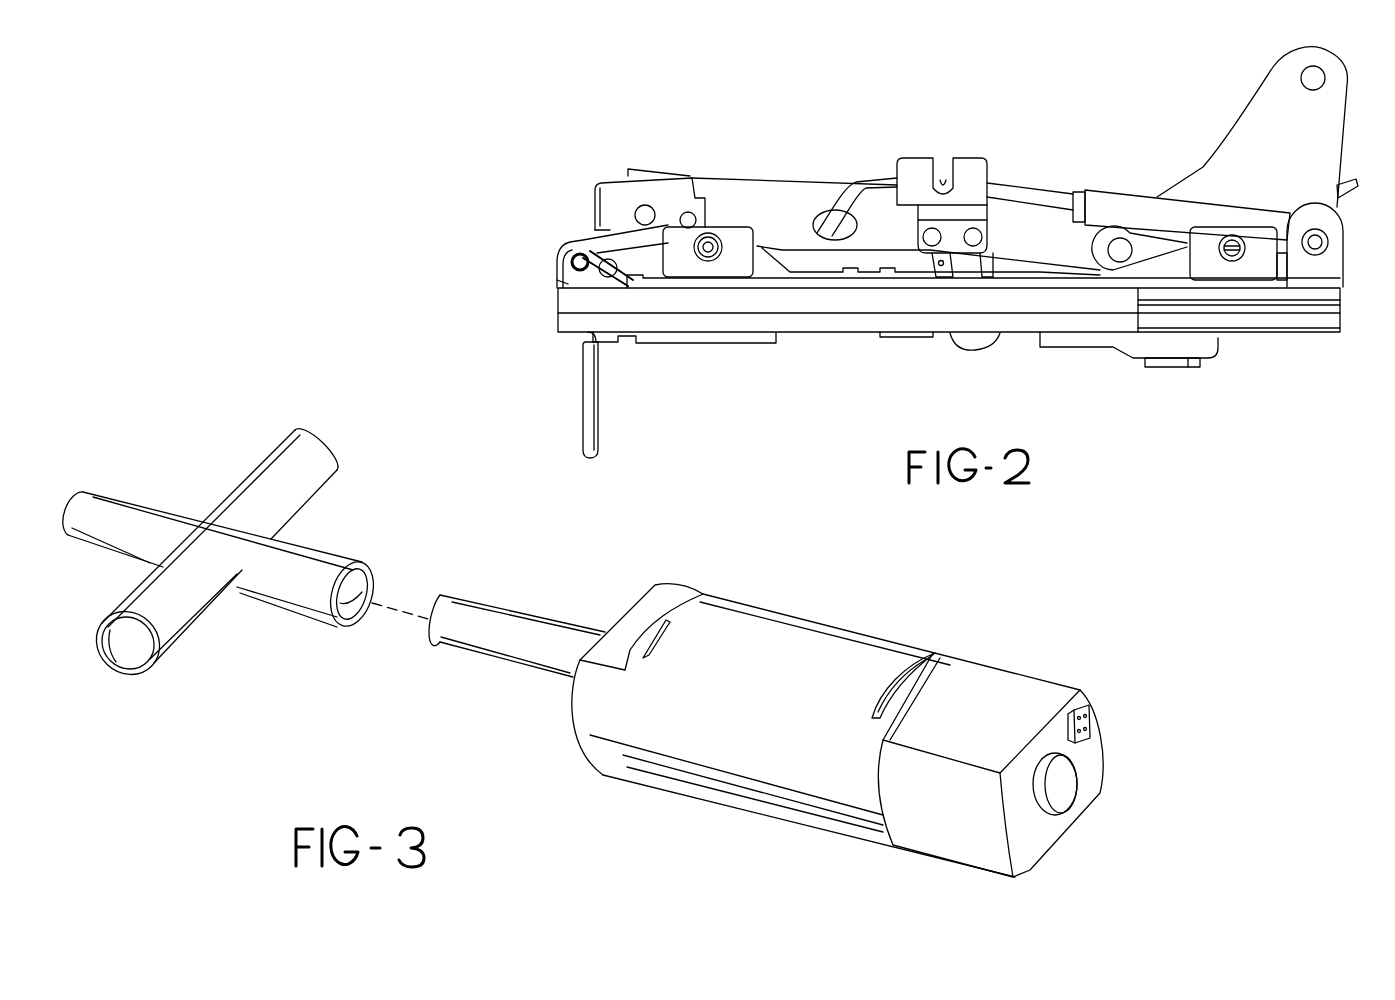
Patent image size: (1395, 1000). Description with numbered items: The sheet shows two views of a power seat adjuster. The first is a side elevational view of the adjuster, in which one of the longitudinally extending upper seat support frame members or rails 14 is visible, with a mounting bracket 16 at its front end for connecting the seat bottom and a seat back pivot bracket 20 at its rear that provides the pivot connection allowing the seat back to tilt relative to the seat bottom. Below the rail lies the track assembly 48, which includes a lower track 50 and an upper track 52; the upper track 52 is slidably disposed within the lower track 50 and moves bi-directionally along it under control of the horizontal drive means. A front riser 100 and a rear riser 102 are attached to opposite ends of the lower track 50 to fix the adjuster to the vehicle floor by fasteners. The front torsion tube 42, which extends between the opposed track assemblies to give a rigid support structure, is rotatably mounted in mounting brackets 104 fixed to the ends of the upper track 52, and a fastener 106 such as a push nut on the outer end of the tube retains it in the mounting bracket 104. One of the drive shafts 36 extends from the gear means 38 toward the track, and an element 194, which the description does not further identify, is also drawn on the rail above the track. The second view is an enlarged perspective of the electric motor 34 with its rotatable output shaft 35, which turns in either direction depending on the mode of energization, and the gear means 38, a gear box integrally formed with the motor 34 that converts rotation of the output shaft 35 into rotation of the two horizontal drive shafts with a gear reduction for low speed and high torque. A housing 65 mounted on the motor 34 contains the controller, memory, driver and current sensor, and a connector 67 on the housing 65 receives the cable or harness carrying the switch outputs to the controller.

In FIG. 2, the frame member 14 is at (730, 186).
In FIG. 2, the mounting bracket 16 is at (607, 180).
In FIG. 2, the seat back pivot bracket 20 is at (1328, 150).
In FIG. 2, the drive shaft 36 is at (578, 242).
In FIG. 2, the front torsion tube 42 is at (722, 252).
In FIG. 2, the track assembly 48 is at (1023, 308).
In FIG. 2, the lower track 50 is at (882, 323).
In FIG. 2, the upper track 52 is at (1302, 310).
In FIG. 2, the front riser 100 is at (590, 388).
In FIG. 2, the rear riser 102 is at (1187, 367).
In FIG. 2, the mounting bracket 104 is at (678, 267).
In FIG. 2, the fastener 106 is at (713, 250).
In FIG. 2, the connector block 194 is at (928, 236).
In FIG. 3, the electric motor 34 is at (628, 747).
In FIG. 3, the output shaft 35 is at (457, 603).
In FIG. 3, the gear means 38 is at (220, 633).
In FIG. 3, the housing 65 is at (1022, 690).
In FIG. 3, the connector 67 is at (1093, 713).